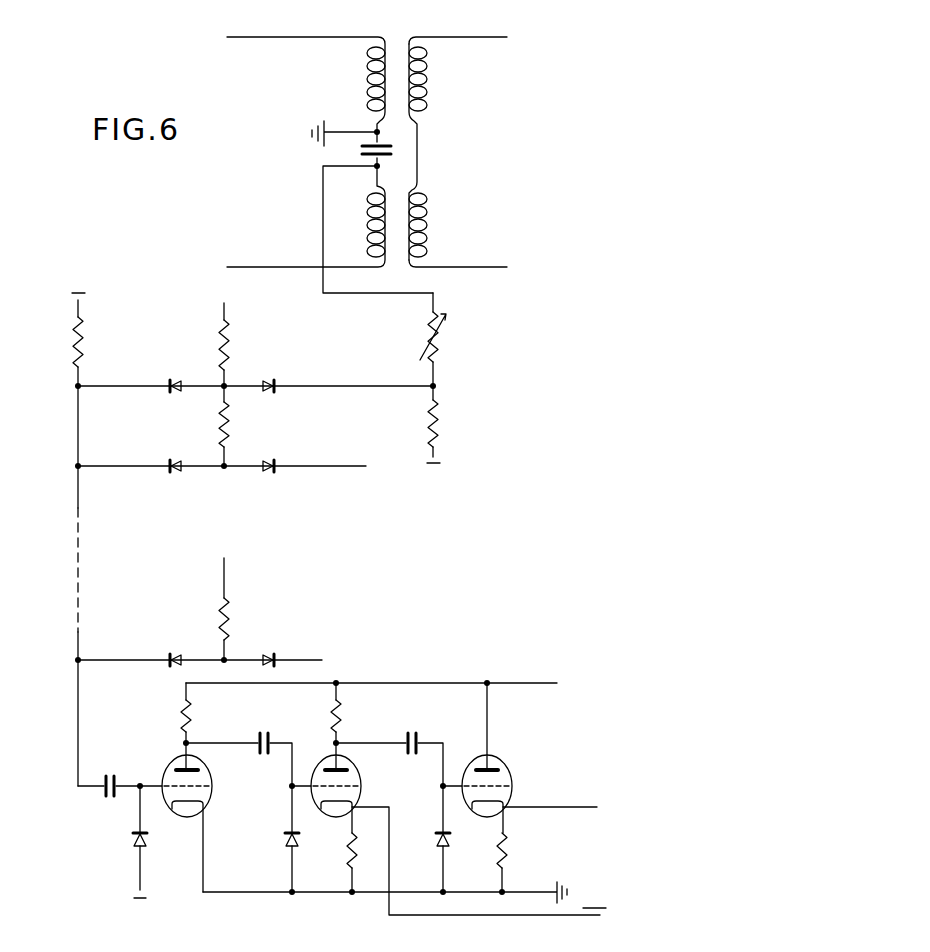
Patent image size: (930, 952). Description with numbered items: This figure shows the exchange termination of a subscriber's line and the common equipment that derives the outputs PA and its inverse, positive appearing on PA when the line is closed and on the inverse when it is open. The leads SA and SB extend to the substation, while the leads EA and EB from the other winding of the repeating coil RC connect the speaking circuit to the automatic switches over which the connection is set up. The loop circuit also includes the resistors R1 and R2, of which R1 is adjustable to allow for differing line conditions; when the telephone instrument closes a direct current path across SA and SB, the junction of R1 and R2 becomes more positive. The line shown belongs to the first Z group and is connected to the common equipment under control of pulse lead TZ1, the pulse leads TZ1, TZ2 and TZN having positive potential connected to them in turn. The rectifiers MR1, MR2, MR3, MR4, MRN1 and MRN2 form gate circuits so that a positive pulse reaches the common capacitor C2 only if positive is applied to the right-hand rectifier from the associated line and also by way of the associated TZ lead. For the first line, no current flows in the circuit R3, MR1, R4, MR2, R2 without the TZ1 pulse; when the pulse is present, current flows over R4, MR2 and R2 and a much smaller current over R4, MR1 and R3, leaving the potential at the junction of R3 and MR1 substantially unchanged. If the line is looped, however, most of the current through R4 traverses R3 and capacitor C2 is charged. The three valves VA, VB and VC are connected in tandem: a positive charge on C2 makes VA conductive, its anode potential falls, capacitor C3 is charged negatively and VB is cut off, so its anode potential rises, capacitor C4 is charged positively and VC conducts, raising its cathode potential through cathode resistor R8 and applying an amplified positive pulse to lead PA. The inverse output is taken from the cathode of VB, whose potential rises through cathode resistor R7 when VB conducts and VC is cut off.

The lead SA is at (306, 74).
The repeating coil RC is at (369, 138).
The lead EA is at (459, 30).
The lead SB is at (306, 216).
The lead EB is at (461, 256).
The resistor R1 is at (447, 339).
The resistor R2 is at (451, 423).
The resistor R3 is at (94, 379).
The resistor R4 is at (240, 353).
The pulse lead TZ1 is at (232, 300).
The pulse lead TZ2 is at (245, 426).
The pulse lead TZN is at (233, 598).
The rectifier MR1 is at (168, 378).
The rectifier MR2 is at (293, 378).
The rectifier MR3 is at (165, 481).
The rectifier MR4 is at (263, 481).
The rectifier MRN1 is at (159, 650).
The rectifier MRN2 is at (271, 650).
The common capacitor C2 is at (120, 774).
The capacitor C3 is at (239, 749).
The capacitor C4 is at (389, 749).
The valve VA is at (182, 787).
The valve VB is at (451, 799).
The valve VC is at (483, 758).
The cathode resistor R7 is at (368, 862).
The cathode resistor R8 is at (519, 862).
The lead PA is at (406, 847).